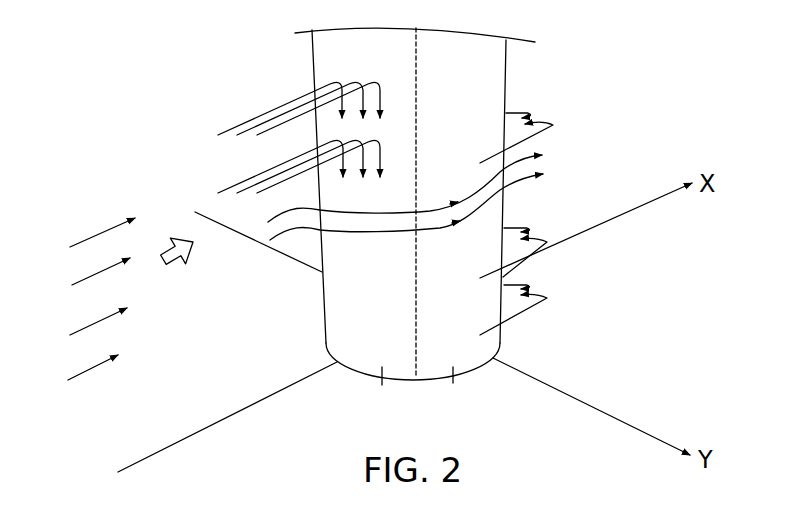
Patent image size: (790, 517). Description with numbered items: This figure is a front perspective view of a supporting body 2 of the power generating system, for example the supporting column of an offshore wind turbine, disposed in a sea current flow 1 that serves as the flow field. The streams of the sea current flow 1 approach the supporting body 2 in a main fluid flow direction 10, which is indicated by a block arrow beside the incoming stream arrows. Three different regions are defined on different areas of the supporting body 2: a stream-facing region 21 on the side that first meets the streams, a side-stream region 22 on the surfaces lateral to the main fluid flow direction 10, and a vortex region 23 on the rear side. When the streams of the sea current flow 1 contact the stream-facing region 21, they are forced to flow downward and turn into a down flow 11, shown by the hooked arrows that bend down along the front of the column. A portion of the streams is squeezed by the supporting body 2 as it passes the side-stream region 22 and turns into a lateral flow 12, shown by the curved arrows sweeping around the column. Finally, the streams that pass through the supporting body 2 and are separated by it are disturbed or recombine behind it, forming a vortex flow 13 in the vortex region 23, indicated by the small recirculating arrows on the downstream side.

The sea current flow 1 is at (93, 235).
The supporting body 2 is at (323, 43).
The main fluid flow direction 10 is at (176, 238).
The down flow 11 is at (382, 93).
The lateral flow 12 is at (445, 228).
The vortex flow 13 is at (551, 123).
The stream-facing region 21 is at (383, 390).
The side-stream region 22 is at (455, 390).
The vortex region 23 is at (509, 80).